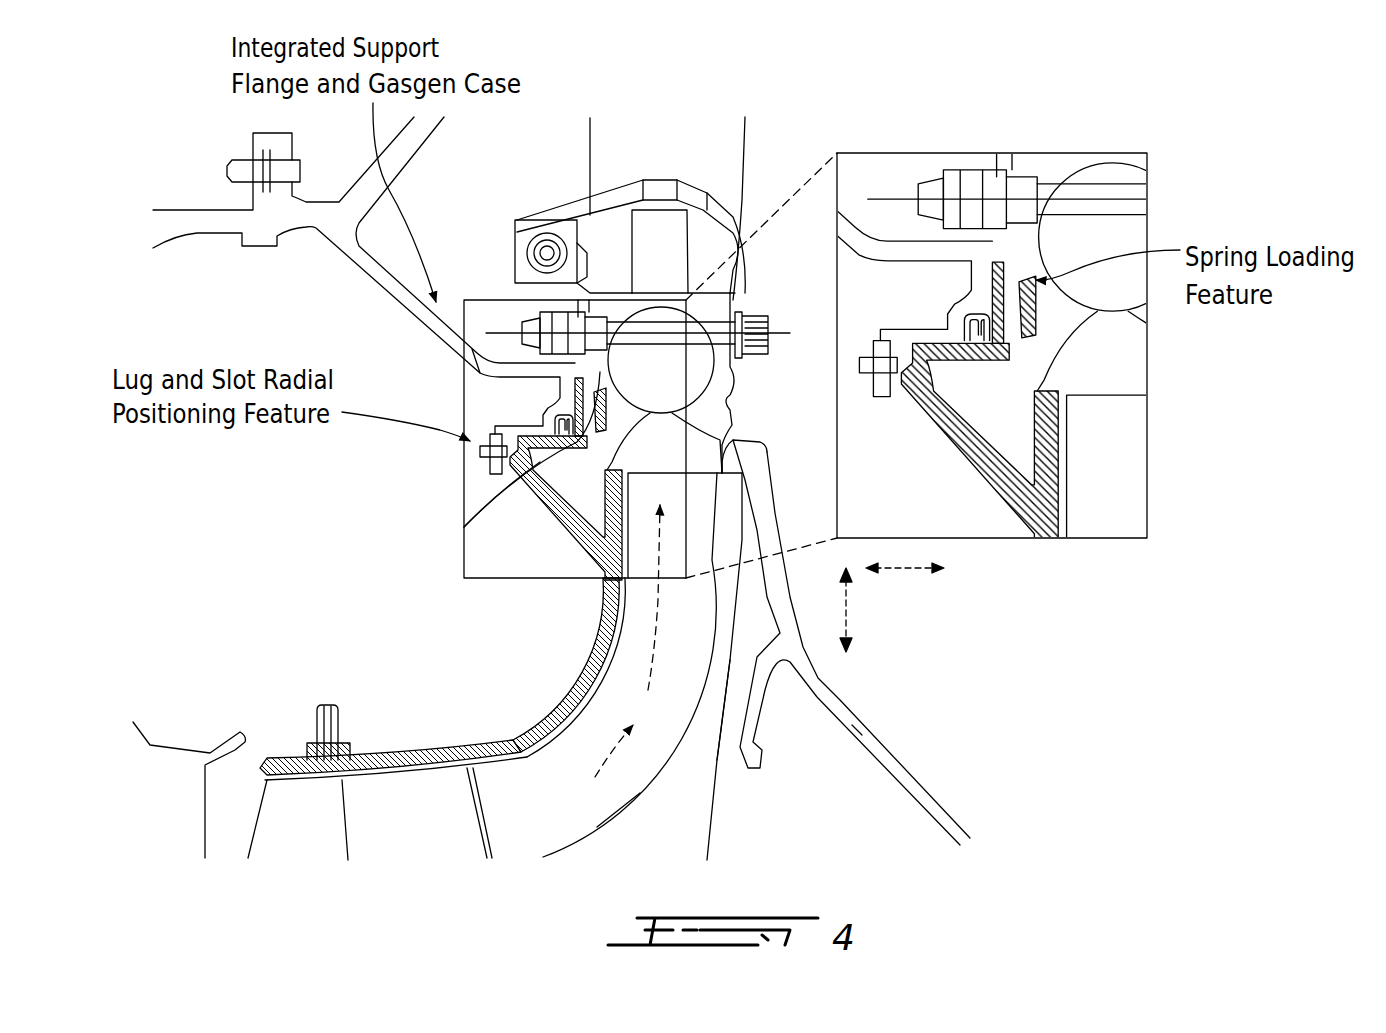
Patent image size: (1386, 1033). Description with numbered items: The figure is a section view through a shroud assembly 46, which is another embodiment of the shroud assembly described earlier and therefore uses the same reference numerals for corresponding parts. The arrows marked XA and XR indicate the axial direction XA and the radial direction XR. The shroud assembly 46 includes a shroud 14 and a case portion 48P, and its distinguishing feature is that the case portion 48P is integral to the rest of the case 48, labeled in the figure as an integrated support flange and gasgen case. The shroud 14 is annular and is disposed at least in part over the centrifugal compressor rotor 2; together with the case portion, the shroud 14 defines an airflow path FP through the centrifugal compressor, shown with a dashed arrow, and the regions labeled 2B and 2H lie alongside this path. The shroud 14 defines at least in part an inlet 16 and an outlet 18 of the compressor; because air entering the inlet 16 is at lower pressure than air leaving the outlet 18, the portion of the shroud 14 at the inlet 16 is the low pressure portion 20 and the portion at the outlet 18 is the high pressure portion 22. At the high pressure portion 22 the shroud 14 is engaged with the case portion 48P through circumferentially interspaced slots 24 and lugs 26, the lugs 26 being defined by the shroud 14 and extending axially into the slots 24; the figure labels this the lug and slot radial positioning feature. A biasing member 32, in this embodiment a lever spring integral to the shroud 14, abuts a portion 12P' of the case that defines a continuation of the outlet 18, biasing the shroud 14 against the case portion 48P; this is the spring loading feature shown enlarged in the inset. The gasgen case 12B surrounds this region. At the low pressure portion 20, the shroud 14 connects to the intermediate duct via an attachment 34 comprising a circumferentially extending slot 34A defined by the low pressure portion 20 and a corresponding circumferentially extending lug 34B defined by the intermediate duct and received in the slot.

The centrifugal compressor rotor 2 is at (755, 820).
The bypass flow path 2B is at (589, 802).
The core flow path 2H is at (695, 746).
The gasgen case 12B is at (693, 300).
The portion of the case 12P' is at (654, 370).
The shroud 14 is at (528, 735).
The inlet 16 is at (245, 828).
The outlet 18 is at (705, 465).
The low pressure portion 20 is at (342, 775).
The high pressure portion 22 is at (590, 505).
The slots 24 is at (475, 475).
The lugs 26 is at (493, 451).
The biasing member 32 is at (522, 540).
The attachment 34 is at (332, 685).
The circumferentially extending slot 34A is at (348, 742).
The circumferentially extending lug 34B is at (317, 710).
The shroud assembly 46 is at (402, 545).
The case 48 is at (355, 298).
The case portion 48P is at (493, 430).
The airflow path FP is at (627, 641).
The axial direction XA is at (910, 575).
The radial direction XR is at (860, 615).